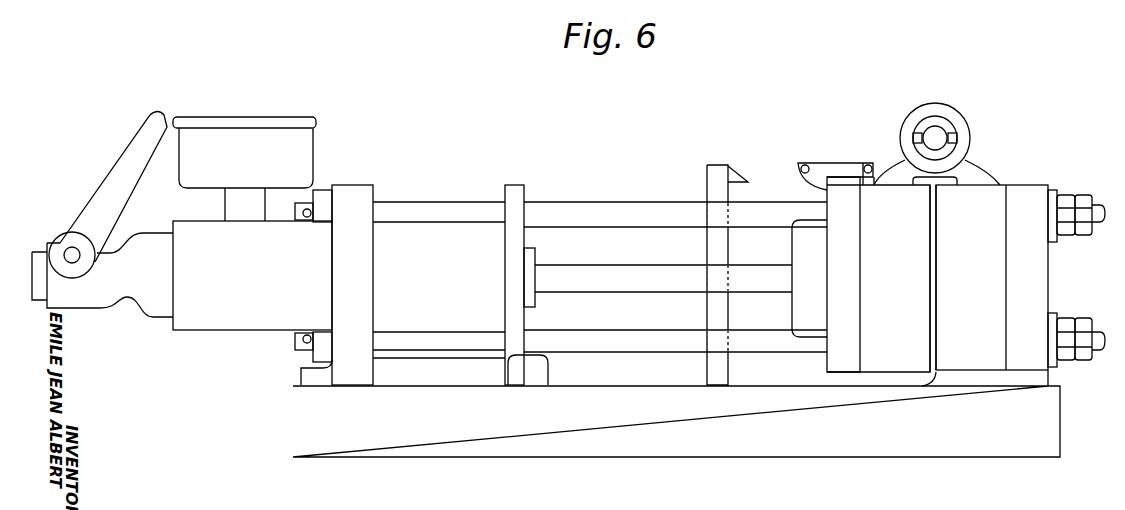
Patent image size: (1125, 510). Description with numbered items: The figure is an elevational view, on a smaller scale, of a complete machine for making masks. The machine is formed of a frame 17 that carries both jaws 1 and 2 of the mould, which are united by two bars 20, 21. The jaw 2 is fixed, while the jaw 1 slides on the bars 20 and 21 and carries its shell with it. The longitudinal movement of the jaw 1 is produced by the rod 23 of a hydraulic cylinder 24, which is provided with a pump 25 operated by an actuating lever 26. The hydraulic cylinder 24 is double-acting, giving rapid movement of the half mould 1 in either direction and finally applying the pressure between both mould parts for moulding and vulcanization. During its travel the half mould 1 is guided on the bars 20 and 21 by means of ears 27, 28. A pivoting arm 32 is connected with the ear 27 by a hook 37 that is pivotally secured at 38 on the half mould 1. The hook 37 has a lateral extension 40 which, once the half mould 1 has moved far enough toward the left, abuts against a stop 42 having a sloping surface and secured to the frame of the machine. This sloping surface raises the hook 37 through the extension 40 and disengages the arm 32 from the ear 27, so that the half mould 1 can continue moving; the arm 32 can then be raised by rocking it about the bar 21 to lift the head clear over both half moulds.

The jaw 1 is at (898, 202).
The jaw 2 is at (980, 208).
The frame 17 is at (388, 438).
The bar 20 is at (695, 345).
The bar 21 is at (597, 207).
The rod 23 is at (770, 285).
The hydraulic cylinder 24 is at (392, 313).
The pump 25 is at (85, 300).
The actuating lever 26 is at (90, 218).
The ear 27 is at (837, 200).
The ear 28 is at (843, 365).
The pivoting arm 32 is at (963, 175).
The hook 37 is at (835, 168).
The pivot 38 is at (868, 165).
The lateral extension 40 is at (806, 166).
The stop 42 is at (733, 178).